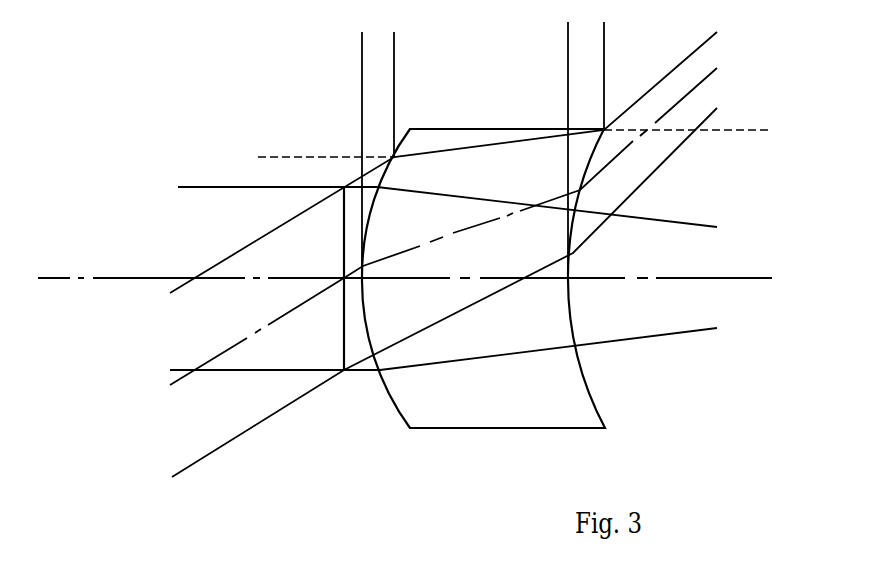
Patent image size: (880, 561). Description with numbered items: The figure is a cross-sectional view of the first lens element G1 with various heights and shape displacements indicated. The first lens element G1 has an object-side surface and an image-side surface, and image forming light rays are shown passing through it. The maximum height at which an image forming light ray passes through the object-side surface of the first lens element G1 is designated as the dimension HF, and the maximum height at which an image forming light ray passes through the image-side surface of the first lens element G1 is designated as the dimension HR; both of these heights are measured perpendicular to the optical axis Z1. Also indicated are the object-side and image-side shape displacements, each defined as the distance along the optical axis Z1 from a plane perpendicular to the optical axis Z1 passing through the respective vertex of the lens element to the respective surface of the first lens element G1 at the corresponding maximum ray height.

The optical axis Z1 is at (94, 279).
The first lens element G1 is at (512, 417).
The maximum height on object-side surface HF is at (266, 157).
The maximum height on image-side surface HR is at (769, 130).